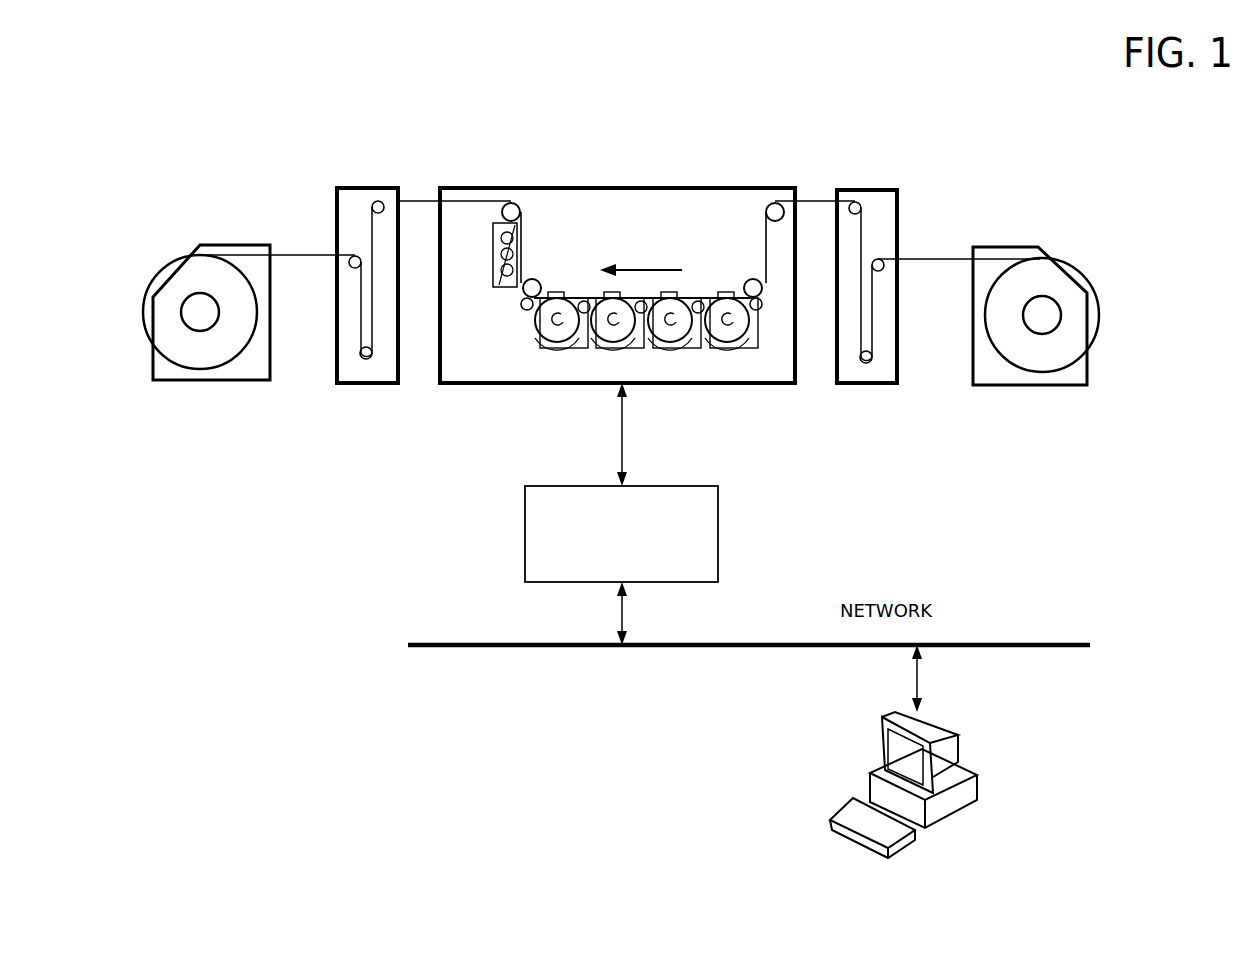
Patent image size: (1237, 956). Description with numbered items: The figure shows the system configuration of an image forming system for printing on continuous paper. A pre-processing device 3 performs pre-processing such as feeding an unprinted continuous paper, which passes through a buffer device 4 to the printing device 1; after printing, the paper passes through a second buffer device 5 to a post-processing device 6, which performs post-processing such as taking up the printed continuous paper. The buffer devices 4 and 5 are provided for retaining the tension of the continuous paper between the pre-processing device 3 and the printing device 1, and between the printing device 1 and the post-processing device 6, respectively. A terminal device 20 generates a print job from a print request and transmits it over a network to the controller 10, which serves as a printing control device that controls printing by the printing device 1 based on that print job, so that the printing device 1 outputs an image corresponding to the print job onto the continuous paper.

The printing device 1 is at (527, 188).
The pre-processing device 3 is at (1014, 247).
The buffer device 4 is at (870, 190).
The buffer device 5 is at (378, 187).
The post-processing device 6 is at (236, 245).
The controller 10 is at (525, 538).
The terminal device 20 is at (958, 745).